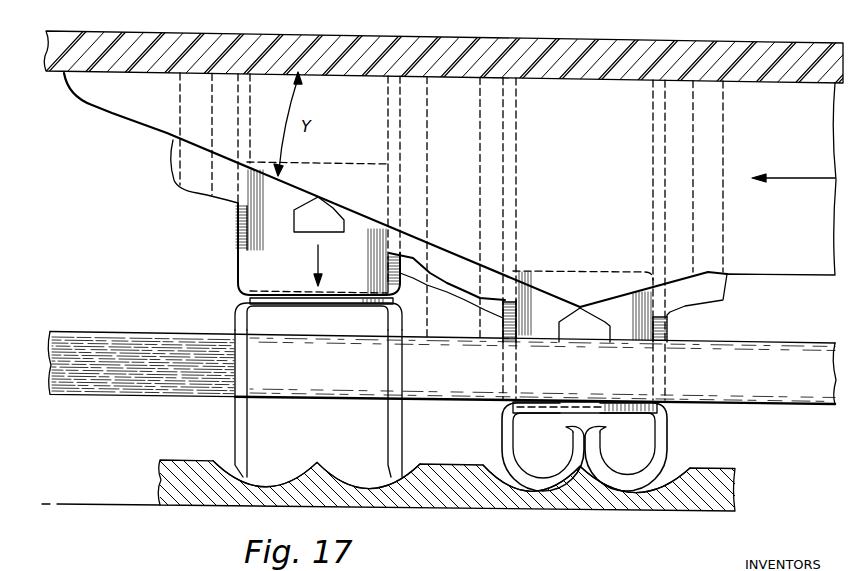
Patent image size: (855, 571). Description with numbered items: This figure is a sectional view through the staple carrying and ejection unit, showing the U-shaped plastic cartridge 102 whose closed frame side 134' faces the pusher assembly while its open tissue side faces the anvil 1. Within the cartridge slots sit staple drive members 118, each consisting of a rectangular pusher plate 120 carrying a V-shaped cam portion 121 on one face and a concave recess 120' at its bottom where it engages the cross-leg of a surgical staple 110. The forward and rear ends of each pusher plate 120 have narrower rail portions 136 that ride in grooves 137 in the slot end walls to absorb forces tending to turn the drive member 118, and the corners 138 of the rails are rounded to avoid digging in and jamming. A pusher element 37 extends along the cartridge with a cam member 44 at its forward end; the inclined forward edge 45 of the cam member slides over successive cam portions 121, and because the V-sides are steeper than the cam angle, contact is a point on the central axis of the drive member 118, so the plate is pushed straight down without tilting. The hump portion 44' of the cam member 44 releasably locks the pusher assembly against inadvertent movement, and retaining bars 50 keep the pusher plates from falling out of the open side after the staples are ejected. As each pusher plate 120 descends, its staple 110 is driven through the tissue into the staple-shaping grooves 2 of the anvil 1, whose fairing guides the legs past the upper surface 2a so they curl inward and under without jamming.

The cartridge 102 is at (313, 33).
The frame side 134' is at (603, 25).
The pusher element 37 is at (764, 100).
The cam member 44 is at (322, 190).
The hump portion 44' is at (625, 298).
The inclined forward edge 45 is at (174, 136).
The grooves 137 is at (400, 106).
The corners 138 is at (402, 165).
The rail portions 136 is at (236, 257).
The staple drive member 118 is at (236, 232).
The pusher plate 120 is at (449, 271).
The V-shaped cam portion 121 is at (320, 198).
The concave recess 120' is at (446, 374).
The retaining bars 50 is at (128, 378).
The surgical staple 110 is at (236, 433).
The base 1 is at (228, 495).
The staple-shaping grooves 2 is at (288, 463).
The upper surface of the anvil 2a is at (431, 464).